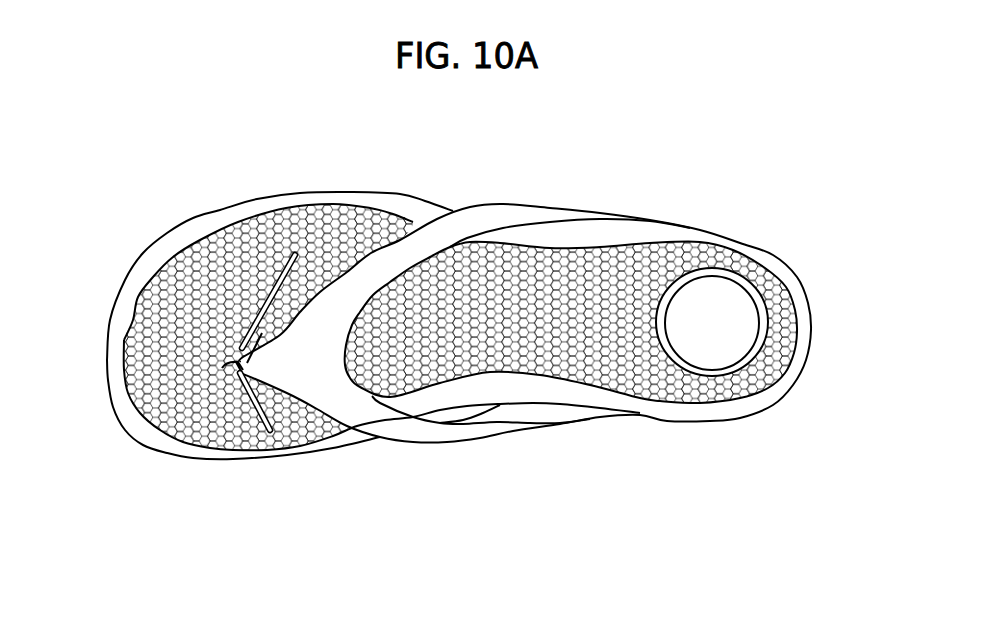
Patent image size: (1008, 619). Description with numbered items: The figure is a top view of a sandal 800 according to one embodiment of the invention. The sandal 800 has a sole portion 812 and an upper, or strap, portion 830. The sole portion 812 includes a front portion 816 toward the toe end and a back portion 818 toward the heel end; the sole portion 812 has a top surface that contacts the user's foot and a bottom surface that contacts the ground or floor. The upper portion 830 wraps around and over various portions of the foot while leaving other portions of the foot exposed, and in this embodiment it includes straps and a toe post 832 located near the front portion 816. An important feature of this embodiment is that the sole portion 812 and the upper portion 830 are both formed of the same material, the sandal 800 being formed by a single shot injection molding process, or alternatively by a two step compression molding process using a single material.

The sandal 800 is at (518, 163).
The sole portion 812 is at (655, 268).
The front portion 816 is at (165, 317).
The back portion 818 is at (770, 355).
The upper portion 830 is at (350, 403).
The toe post 832 is at (232, 370).